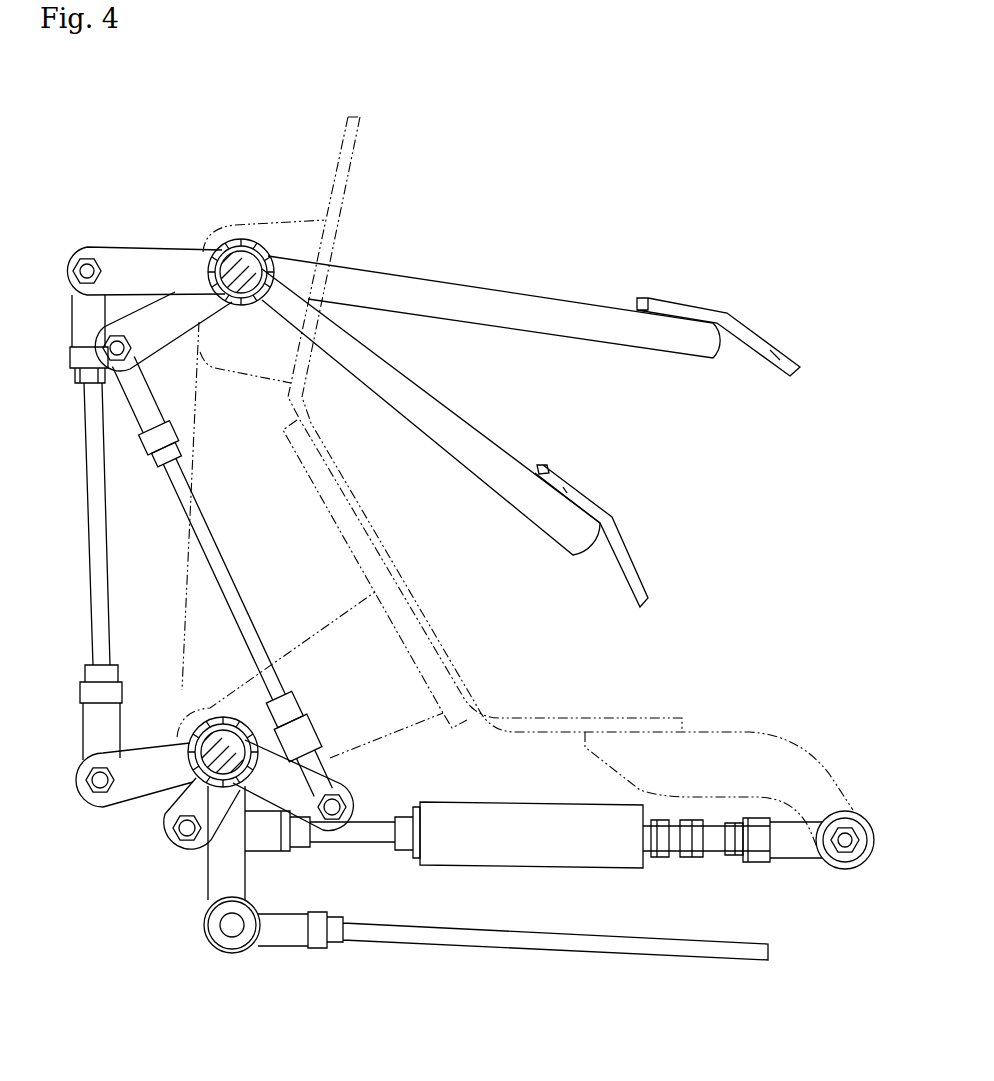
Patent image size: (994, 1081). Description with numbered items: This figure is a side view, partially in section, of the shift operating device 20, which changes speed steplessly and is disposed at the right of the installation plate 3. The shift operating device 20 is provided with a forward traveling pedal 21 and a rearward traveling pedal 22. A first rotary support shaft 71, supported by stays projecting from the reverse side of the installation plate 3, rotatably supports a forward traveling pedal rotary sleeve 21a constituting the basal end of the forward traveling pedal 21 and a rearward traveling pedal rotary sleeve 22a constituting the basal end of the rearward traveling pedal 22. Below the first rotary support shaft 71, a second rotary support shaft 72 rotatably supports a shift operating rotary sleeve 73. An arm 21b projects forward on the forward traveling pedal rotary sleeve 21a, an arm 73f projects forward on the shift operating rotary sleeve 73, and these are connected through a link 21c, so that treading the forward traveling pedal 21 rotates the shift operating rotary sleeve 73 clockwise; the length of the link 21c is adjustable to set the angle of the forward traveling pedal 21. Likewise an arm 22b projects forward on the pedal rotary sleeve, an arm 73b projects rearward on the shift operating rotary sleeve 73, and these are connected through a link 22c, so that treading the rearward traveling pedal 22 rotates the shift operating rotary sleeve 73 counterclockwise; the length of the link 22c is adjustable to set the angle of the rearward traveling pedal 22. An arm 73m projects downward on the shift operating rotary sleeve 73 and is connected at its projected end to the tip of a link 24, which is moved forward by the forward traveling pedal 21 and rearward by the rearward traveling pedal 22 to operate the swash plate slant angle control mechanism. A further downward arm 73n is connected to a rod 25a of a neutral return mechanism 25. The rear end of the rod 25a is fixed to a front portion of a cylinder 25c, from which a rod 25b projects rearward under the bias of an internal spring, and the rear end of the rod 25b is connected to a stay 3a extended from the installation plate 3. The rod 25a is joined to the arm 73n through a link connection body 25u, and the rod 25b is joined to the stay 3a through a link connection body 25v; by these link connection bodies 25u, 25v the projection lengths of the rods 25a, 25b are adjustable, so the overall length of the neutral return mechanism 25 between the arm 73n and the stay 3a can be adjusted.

The installation plate 3 is at (517, 718).
The stay 3a is at (800, 743).
The shift operating device 20 is at (608, 197).
The forward traveling pedal 21 is at (659, 543).
The forward traveling pedal rotary sleeve 21a is at (233, 240).
The arm 21b is at (126, 251).
The link 21c is at (126, 594).
The rearward traveling pedal 22 is at (770, 311).
The rearward traveling pedal rotary sleeve 22a is at (232, 232).
The arm 22b is at (176, 341).
The link 22c is at (239, 559).
The link 24 is at (536, 962).
The neutral return mechanism 25 is at (521, 787).
The rod 25a is at (344, 855).
The rod 25b is at (718, 868).
The cylinder 25c is at (610, 868).
The link connection body 25u is at (265, 857).
The link connection body 25v is at (801, 871).
The first rotary support shaft 71 is at (250, 239).
The second rotary support shaft 72 is at (222, 717).
The shift operating rotary sleeve 73 is at (225, 802).
The arm 73b is at (307, 768).
The arm 73f is at (107, 804).
The arm 73m is at (207, 893).
The arm 73n is at (173, 847).